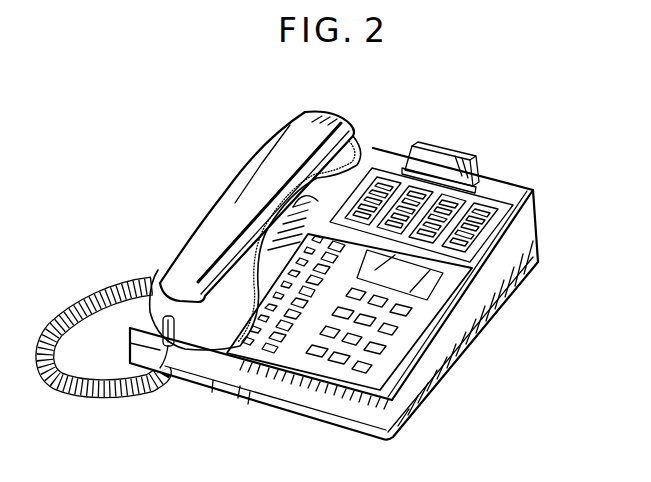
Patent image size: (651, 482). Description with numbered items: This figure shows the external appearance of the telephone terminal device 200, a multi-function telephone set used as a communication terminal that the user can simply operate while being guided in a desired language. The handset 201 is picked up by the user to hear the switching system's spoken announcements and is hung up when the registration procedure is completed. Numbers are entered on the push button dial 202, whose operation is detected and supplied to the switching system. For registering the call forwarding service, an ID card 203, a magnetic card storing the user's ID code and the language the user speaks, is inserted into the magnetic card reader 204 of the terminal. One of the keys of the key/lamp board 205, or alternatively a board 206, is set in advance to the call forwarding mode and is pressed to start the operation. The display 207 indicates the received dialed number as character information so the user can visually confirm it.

The telephone terminal device 200 is at (420, 417).
The handset 201 is at (327, 113).
The push button dial 202 is at (400, 340).
The ID card 203 is at (440, 145).
The magnetic card reader 204 is at (483, 180).
The key/lamp board 205 is at (253, 350).
The board 206 is at (535, 189).
The display 207 is at (440, 280).